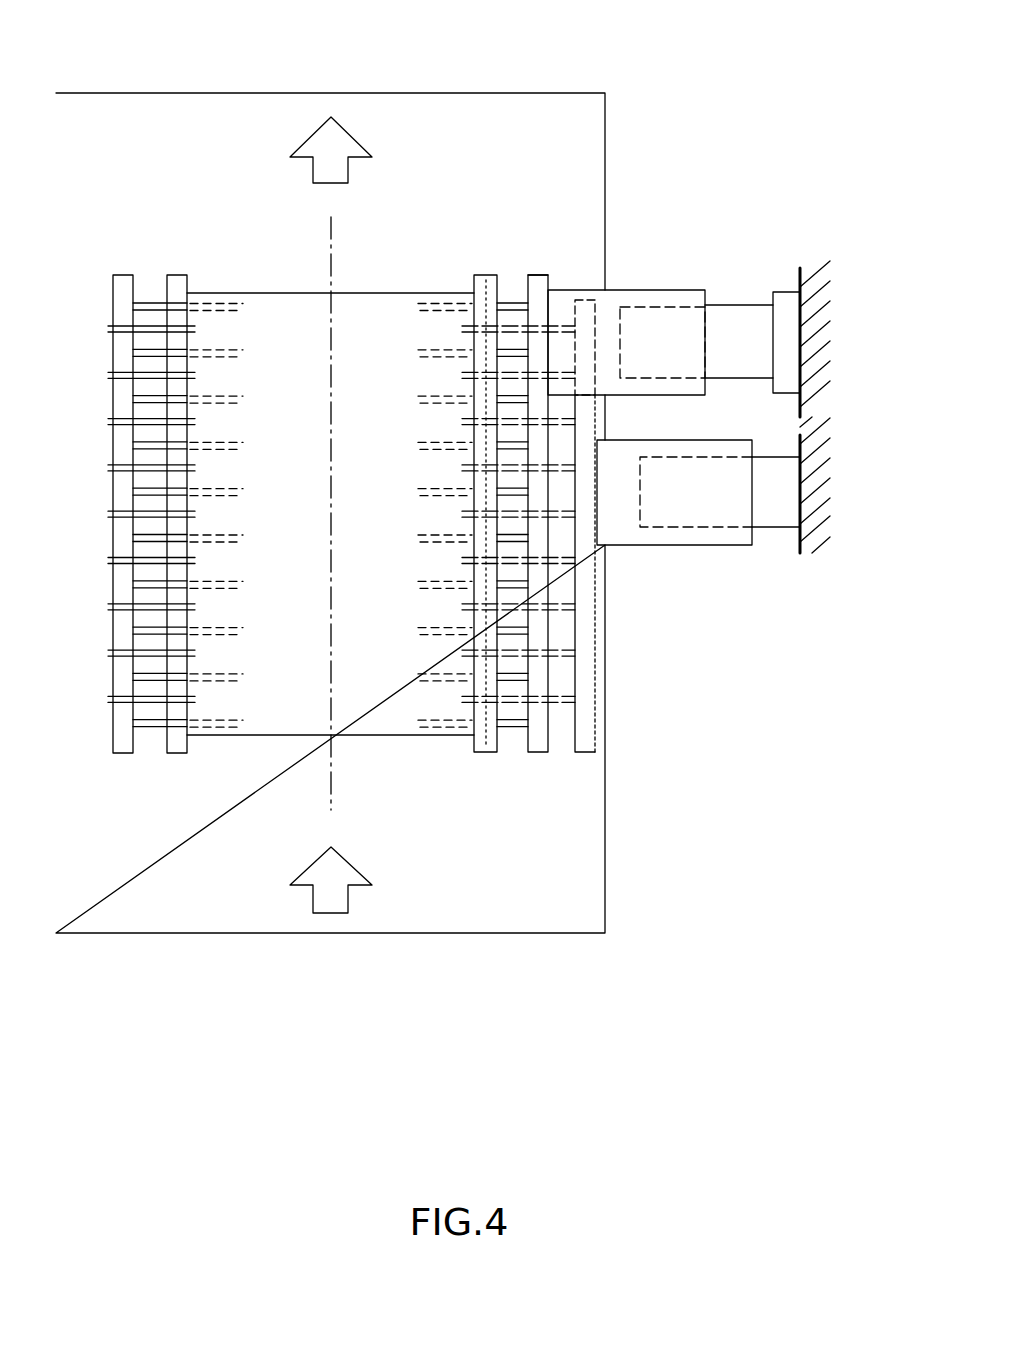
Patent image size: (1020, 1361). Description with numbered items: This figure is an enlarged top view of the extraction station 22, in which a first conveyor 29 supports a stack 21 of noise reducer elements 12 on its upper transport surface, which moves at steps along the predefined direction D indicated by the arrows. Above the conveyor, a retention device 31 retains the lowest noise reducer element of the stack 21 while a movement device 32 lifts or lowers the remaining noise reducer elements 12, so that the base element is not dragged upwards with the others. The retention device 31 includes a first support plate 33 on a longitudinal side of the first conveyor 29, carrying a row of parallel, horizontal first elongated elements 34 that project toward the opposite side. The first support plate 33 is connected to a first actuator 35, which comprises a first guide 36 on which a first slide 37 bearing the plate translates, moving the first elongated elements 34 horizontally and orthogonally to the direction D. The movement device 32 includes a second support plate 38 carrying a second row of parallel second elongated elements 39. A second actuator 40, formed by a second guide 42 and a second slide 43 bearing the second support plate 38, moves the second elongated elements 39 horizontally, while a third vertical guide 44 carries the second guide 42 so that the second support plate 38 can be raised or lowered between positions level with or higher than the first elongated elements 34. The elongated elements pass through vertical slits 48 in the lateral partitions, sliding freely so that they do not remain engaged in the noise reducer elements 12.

The noise reducer elements 12 is at (252, 293).
The stack 21 is at (398, 284).
The extraction station 22 is at (268, 1043).
The first conveyor 29 is at (145, 925).
The retention device 31 is at (600, 720).
The movement device 32 is at (545, 762).
The first support plate 33 is at (597, 651).
The first elongated elements 34 is at (555, 325).
The first actuator 35 is at (762, 549).
The first guide 36 is at (767, 490).
The first slide 37 is at (730, 440).
The second support plate 38 is at (542, 275).
The second elongated elements 39 is at (517, 350).
The second actuator 40 is at (624, 287).
The second guide 42 is at (742, 343).
The second slide 43 is at (678, 290).
The third vertical guide 44 is at (783, 310).
The vertical slits 48 is at (475, 690).
The predefined direction D is at (305, 135).